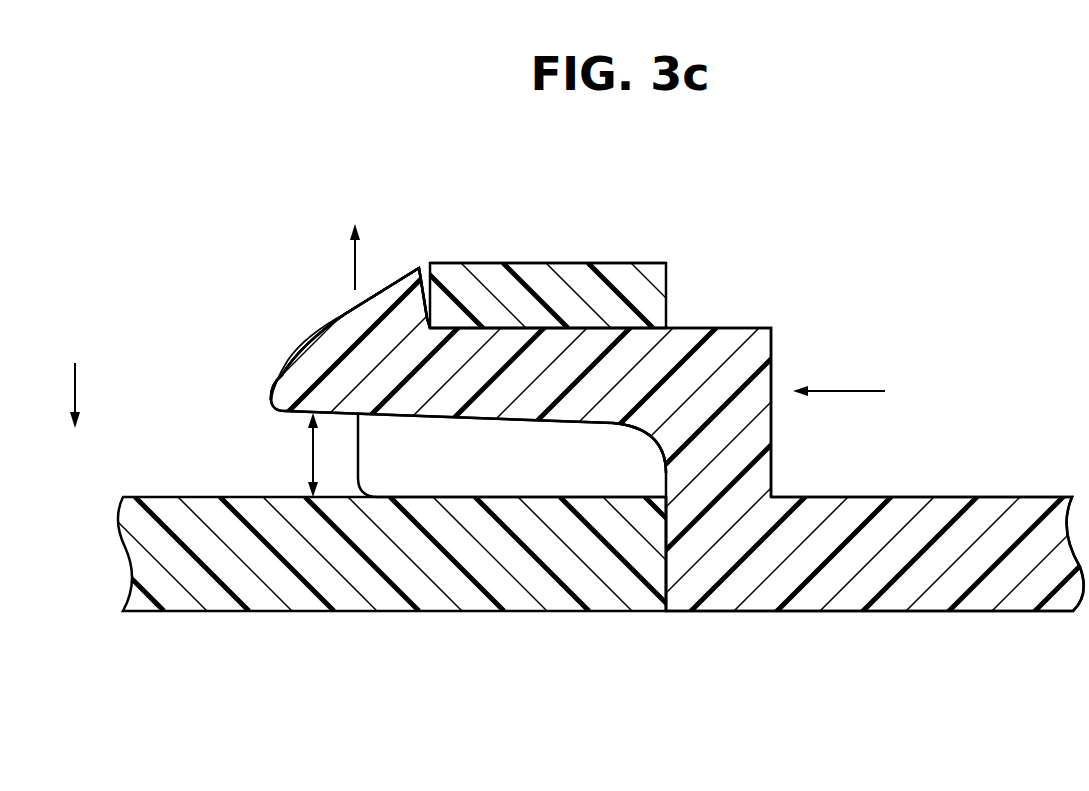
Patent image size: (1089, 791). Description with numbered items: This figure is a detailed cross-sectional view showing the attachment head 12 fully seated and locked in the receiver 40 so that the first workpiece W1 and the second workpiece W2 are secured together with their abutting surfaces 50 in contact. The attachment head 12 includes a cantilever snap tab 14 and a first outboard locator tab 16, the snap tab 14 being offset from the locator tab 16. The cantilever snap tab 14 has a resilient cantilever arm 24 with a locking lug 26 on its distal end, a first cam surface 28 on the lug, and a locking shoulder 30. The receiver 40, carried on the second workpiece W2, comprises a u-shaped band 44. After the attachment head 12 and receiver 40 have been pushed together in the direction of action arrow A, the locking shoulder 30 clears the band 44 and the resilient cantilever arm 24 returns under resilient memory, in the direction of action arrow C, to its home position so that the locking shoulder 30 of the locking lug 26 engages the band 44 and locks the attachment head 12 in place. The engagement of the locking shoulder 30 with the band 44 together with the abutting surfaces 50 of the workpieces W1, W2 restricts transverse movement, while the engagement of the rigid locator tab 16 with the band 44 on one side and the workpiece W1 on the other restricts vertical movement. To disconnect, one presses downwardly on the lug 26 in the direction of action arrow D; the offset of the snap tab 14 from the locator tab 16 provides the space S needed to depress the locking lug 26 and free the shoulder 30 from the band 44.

The attachment head 12 is at (806, 270).
The cantilever snap tab 14 is at (447, 418).
The first outboard locator tab 16 is at (530, 465).
The resilient cantilever arm 24 is at (587, 357).
The locking lug 26 is at (360, 358).
The first cam surface 28 is at (350, 310).
The locking shoulder 30 is at (430, 290).
The receiver 40 is at (510, 243).
The u-shaped band 44 is at (560, 262).
The abutting surfaces 50 is at (665, 567).
The first workpiece W1 is at (988, 508).
The second workpiece W2 is at (280, 585).
The space S is at (310, 452).
The action arrow A is at (845, 391).
The action arrow C is at (355, 257).
The action arrow D is at (77, 391).